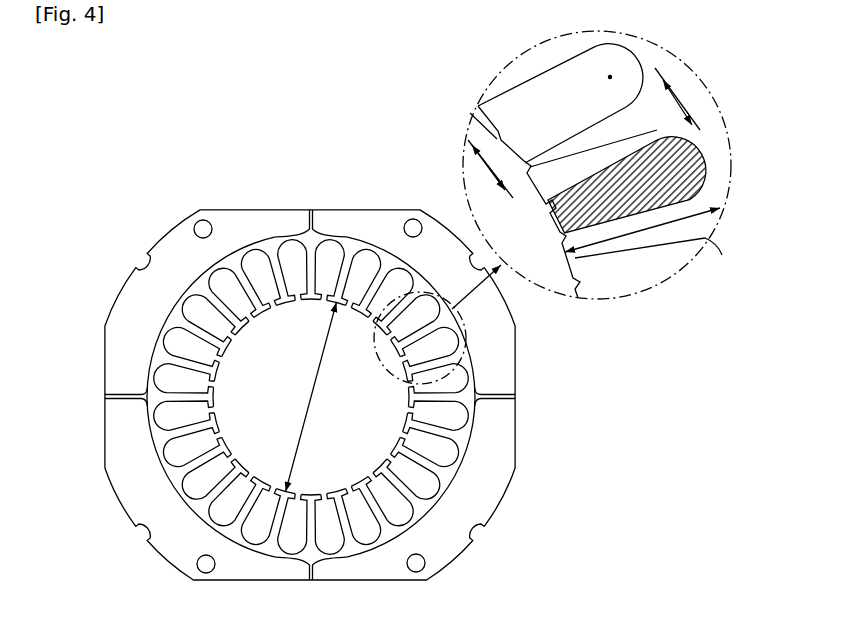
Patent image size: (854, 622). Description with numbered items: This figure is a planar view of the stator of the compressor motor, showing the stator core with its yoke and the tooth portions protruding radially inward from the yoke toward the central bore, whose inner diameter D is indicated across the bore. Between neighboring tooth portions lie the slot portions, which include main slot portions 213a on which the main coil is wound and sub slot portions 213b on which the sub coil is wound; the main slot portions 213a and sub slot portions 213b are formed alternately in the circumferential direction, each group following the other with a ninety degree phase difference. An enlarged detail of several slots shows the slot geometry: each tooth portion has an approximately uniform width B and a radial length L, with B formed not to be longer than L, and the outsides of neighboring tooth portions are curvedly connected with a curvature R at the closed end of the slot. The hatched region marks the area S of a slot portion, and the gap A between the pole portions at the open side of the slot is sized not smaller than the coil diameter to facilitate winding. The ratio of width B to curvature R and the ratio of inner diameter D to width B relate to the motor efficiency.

The main slot portion 213a is at (105, 396).
The sub slot portion 213b is at (311, 210).
The inner diameter of the stator D is at (311, 396).
The curvature R is at (634, 52).
The inter-pole gap A is at (490, 169).
The width of tooth portion B is at (677, 99).
The area of slot portion S is at (627, 185).
The length of tooth portion in radial direction L is at (642, 230).